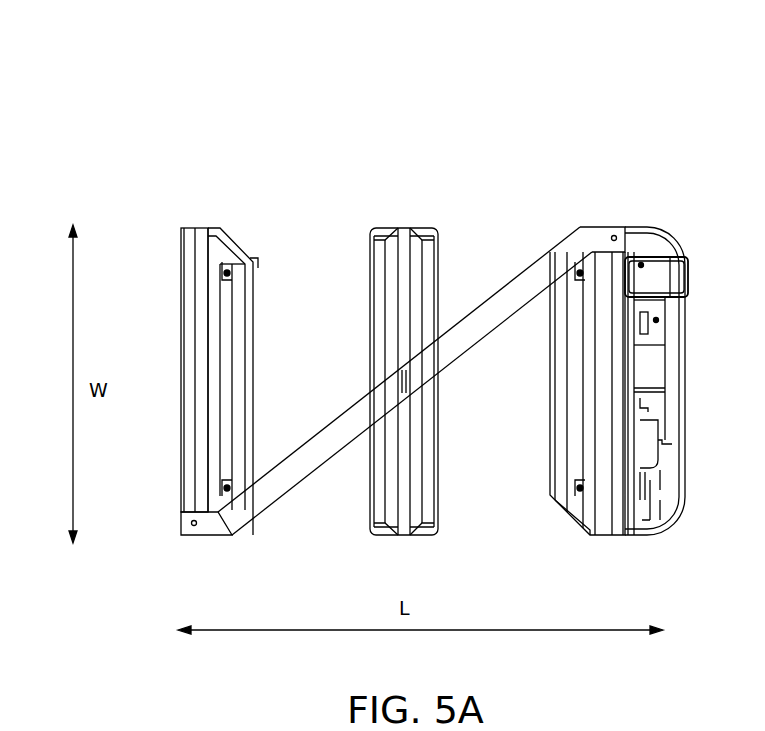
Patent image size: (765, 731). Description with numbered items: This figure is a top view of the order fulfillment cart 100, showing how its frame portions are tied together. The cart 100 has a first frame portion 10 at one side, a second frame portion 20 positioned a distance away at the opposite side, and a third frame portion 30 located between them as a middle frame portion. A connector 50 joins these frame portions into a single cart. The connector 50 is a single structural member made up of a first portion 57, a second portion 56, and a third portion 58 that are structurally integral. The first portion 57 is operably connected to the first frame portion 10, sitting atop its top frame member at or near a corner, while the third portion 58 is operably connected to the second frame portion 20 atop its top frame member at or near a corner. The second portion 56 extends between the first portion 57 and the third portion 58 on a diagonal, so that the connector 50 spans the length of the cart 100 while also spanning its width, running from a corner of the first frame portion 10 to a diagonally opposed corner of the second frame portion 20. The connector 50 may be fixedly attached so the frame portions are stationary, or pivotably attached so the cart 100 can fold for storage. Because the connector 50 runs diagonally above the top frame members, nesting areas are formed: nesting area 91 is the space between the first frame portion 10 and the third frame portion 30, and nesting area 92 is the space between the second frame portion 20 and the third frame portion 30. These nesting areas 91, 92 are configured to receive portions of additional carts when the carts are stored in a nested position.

The order fulfillment cart 100 is at (142, 124).
The first frame portion 10 is at (640, 232).
The second frame portion 20 is at (207, 228).
The third frame portion 30 is at (398, 228).
The connector 50 is at (550, 268).
The second portion 56 is at (276, 494).
The first portion 57 is at (210, 518).
The third portion 58 is at (596, 232).
The nesting area 91 is at (301, 318).
The nesting area 92 is at (473, 268).